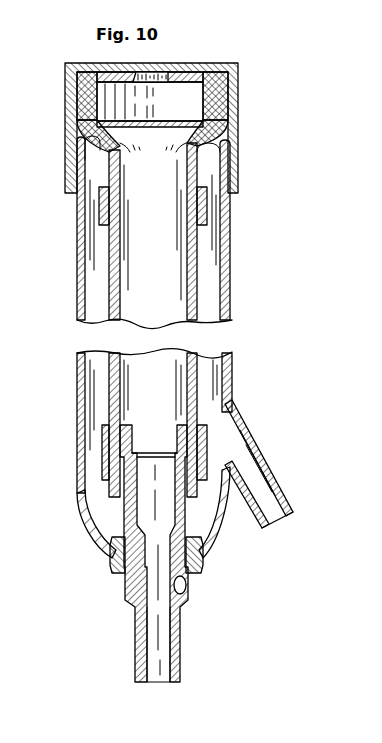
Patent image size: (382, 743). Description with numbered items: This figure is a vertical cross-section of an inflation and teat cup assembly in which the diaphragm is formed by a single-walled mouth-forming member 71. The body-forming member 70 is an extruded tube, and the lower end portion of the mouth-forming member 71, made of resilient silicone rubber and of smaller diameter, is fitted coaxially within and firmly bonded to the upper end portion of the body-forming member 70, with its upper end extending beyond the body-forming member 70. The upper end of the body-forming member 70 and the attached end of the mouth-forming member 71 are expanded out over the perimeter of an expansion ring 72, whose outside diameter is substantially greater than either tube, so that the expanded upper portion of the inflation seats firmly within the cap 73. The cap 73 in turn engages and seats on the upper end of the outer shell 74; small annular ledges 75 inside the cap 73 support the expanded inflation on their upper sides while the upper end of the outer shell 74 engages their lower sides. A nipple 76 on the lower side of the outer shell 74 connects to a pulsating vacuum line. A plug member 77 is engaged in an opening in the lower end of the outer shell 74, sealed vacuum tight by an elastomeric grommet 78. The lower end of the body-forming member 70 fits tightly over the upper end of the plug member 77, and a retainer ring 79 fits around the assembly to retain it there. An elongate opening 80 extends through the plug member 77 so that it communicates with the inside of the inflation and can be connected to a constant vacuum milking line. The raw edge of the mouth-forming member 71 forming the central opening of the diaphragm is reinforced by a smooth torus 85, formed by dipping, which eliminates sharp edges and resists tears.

The body-forming member 70 is at (109, 293).
The mouth-forming member 71 is at (115, 73).
The expansion ring 72 is at (90, 99).
The cap 73 is at (67, 128).
The outer shell 74 is at (76, 231).
The annular ledge 75 is at (90, 152).
The nipple 76 is at (277, 484).
The plug member 77 is at (182, 438).
The grommet 78 is at (113, 568).
The retainer ring 79 is at (104, 457).
The elongate opening 80 is at (165, 680).
The torus 85 is at (166, 75).